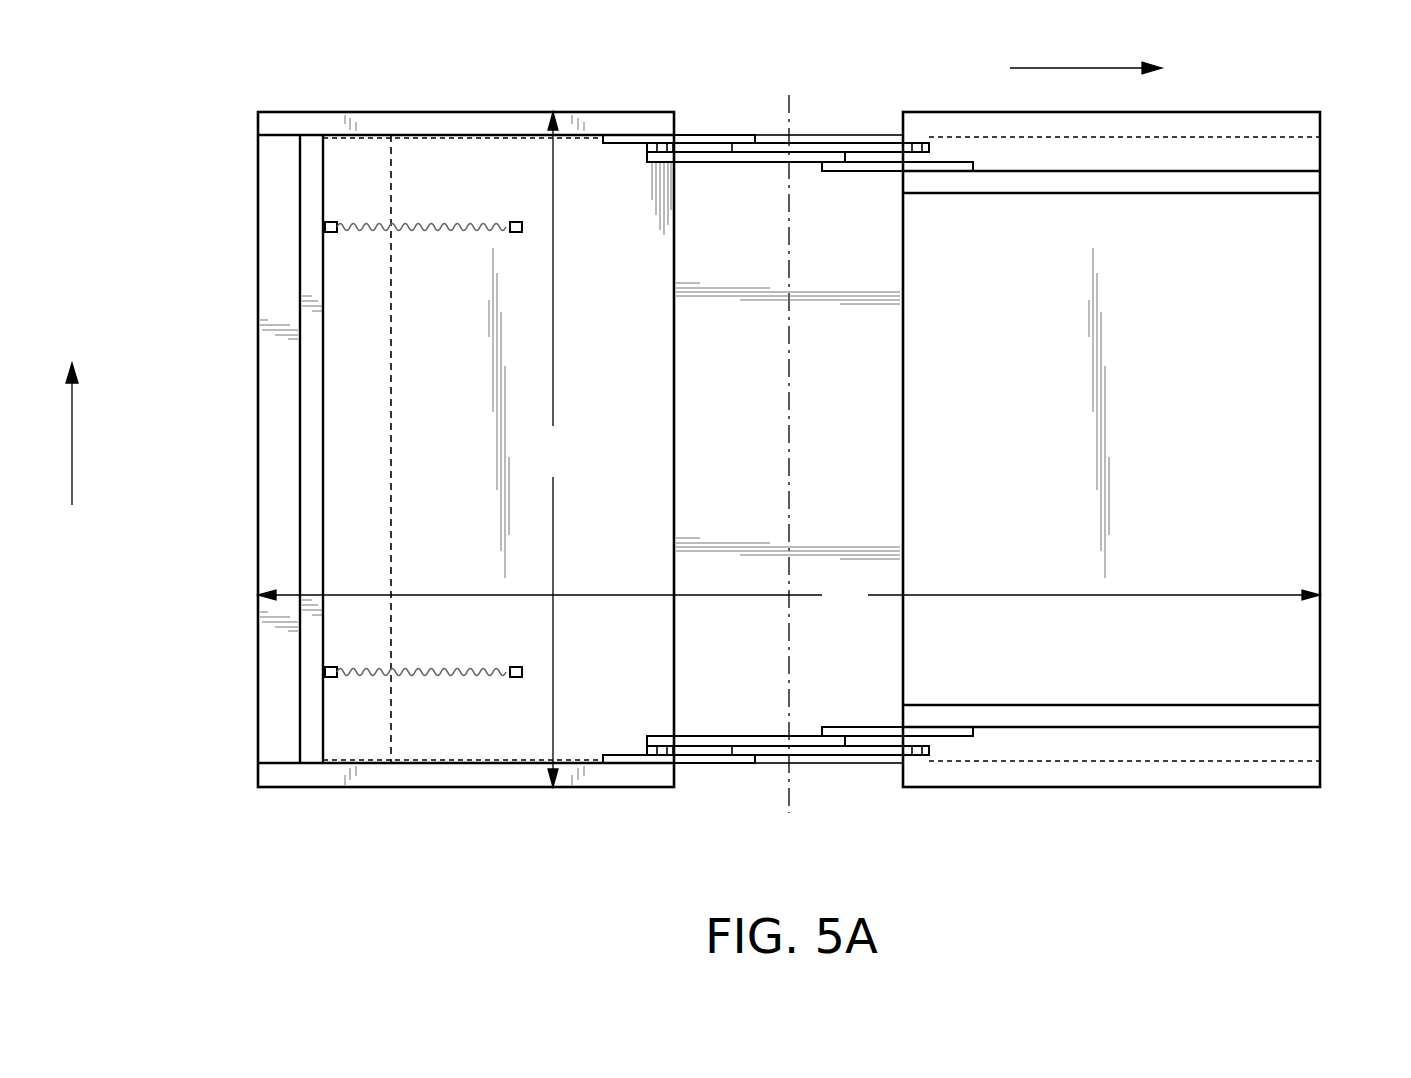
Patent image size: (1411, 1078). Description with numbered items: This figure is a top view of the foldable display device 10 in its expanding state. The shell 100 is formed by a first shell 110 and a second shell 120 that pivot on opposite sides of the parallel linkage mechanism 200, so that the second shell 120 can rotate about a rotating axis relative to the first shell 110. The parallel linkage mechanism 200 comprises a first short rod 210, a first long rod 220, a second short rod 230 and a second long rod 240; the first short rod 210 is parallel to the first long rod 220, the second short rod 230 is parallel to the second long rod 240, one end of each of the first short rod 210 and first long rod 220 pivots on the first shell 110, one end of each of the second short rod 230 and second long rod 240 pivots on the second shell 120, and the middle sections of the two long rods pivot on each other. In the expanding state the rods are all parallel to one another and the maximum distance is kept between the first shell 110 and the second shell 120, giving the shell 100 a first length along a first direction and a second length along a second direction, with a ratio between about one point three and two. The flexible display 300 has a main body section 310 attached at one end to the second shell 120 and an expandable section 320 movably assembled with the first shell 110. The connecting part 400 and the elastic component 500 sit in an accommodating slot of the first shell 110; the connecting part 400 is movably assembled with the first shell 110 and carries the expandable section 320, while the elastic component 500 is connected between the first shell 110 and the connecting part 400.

The foldable display device 10 is at (1403, 88).
The shell 100 is at (1025, 845).
The first shell 110 is at (586, 787).
The second shell 120 is at (997, 787).
The parallel linkage mechanism 200 is at (750, 106).
The first short rod 210 is at (703, 135).
The first long rod 220 is at (752, 163).
The second short rod 230 is at (860, 172).
The second long rod 240 is at (841, 150).
The flexible display 300 is at (172, 350).
The main body section 310 is at (430, 500).
The expandable section 320 is at (280, 366).
The connecting part 400 is at (313, 283).
The elastic component 500 is at (433, 218).